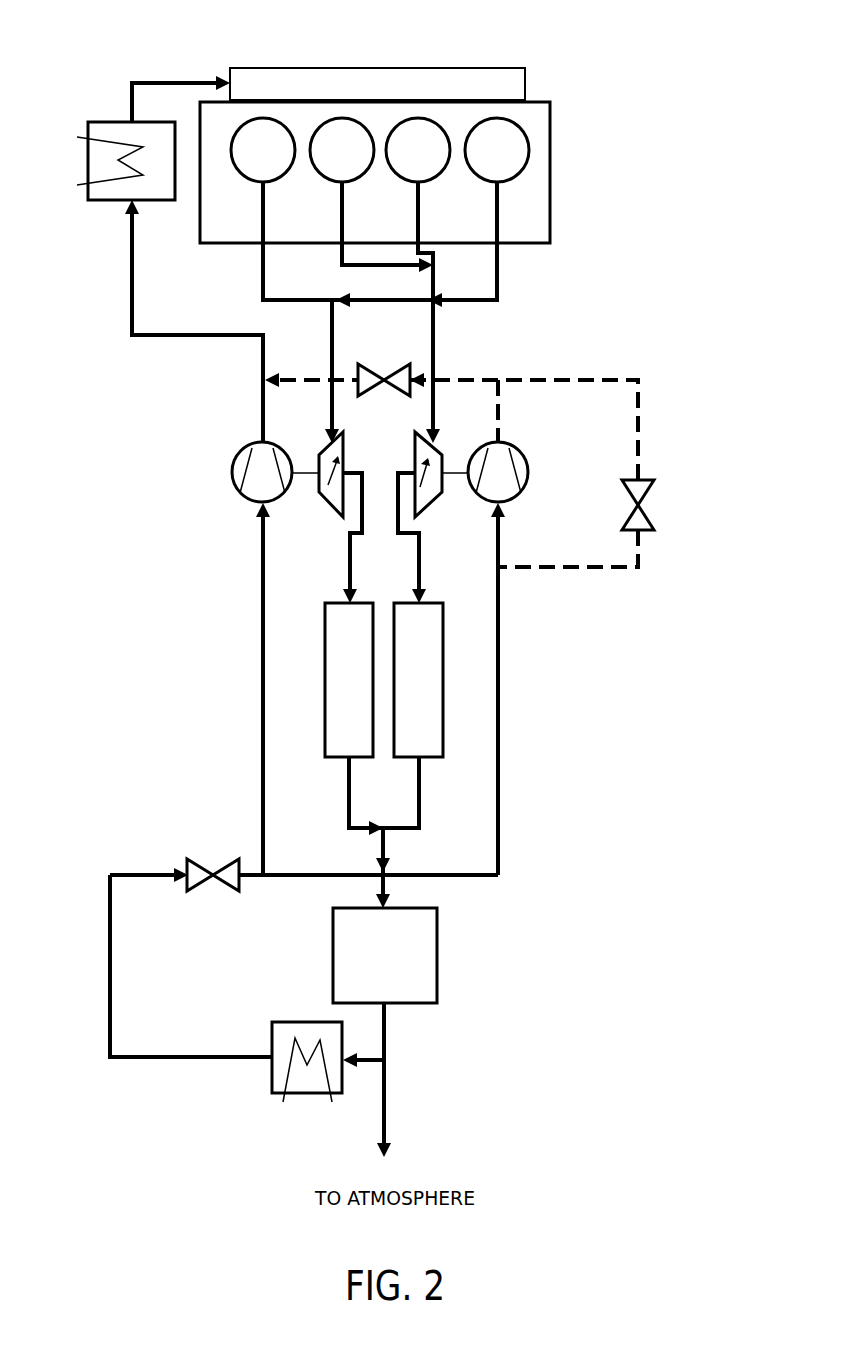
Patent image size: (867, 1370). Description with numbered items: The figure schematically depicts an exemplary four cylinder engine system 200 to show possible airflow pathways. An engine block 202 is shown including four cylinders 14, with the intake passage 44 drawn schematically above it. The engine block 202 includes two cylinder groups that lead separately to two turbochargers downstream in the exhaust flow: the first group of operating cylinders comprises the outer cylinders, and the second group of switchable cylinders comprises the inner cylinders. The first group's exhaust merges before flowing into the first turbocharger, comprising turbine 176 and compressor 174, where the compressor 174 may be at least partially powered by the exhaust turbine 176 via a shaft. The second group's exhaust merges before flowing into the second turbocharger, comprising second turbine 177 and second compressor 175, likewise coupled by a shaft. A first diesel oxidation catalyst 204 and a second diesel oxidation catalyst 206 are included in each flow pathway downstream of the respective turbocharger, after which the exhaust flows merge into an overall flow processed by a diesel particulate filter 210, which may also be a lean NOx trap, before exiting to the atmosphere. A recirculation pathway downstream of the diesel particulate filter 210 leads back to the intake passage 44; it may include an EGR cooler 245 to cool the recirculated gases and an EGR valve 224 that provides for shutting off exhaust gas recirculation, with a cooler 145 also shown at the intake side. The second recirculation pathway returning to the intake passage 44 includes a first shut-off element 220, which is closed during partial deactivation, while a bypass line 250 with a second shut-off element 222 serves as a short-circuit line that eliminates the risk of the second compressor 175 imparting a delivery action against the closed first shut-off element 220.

The engine system 200 is at (575, 26).
The engine block 202 is at (550, 125).
The cylinders 14 is at (380, 150).
The intake passage 44 is at (377, 84).
The cooler 145 is at (100, 122).
The compressor 174 is at (236, 460).
The second compressor 175 is at (525, 460).
The turbine 176 is at (330, 510).
The second turbine 177 is at (432, 510).
The first diesel oxidation catalyst 204 is at (349, 680).
The second diesel oxidation catalyst 206 is at (418, 680).
The diesel particulate filter 210 is at (385, 955).
The first shut-off element 220 is at (366, 368).
The second shut-off element 222 is at (650, 480).
The EGR valve 224 is at (190, 862).
The EGR cooler 245 is at (288, 1022).
The bypass line 250 is at (630, 378).